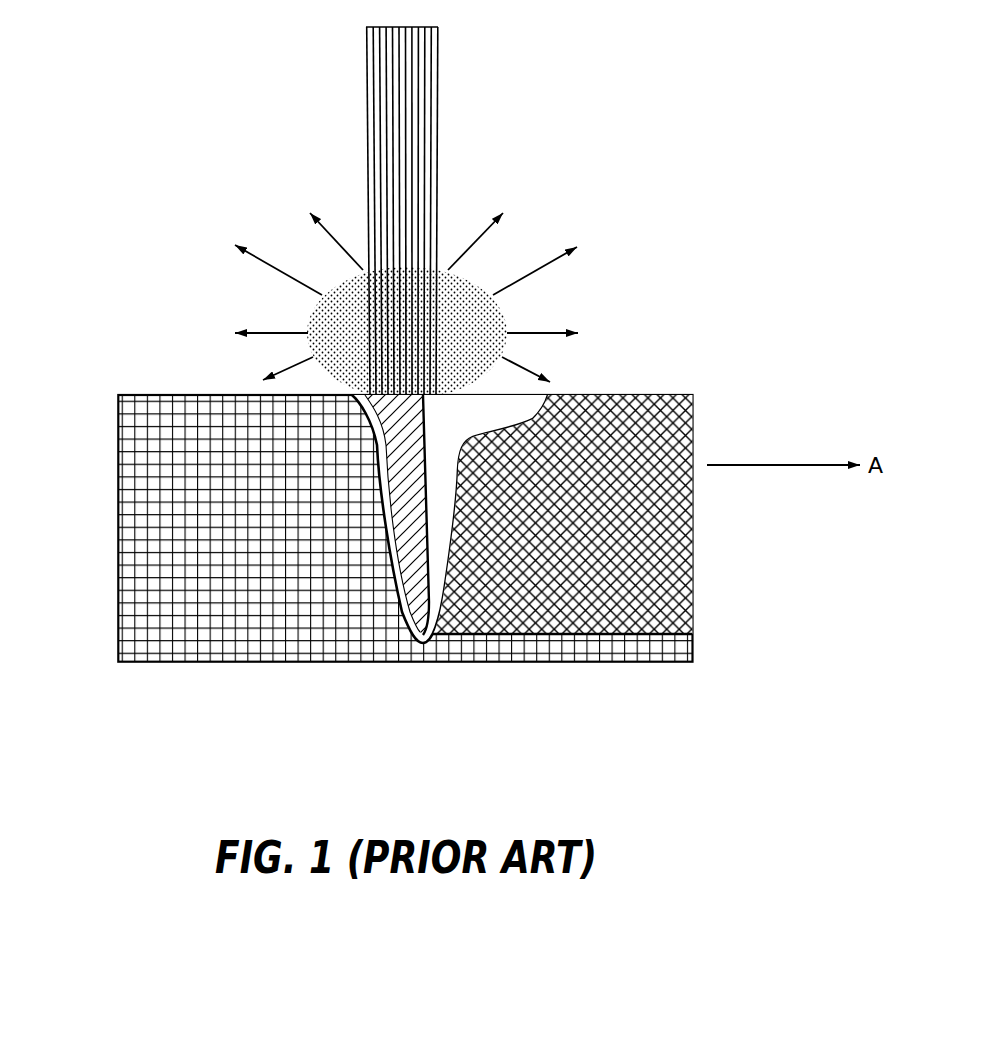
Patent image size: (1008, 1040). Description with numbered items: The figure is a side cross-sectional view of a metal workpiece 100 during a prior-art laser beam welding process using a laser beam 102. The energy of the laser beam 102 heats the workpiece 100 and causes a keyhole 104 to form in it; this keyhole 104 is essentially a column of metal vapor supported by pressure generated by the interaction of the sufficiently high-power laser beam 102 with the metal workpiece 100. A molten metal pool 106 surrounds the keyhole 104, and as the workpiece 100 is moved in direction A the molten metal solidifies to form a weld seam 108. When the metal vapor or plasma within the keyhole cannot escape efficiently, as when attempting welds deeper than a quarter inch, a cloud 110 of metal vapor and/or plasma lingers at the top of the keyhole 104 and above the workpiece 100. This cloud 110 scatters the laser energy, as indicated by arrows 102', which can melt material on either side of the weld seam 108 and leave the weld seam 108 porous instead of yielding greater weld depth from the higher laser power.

The metal workpiece 100 is at (128, 529).
The laser beam 102 is at (438, 211).
The arrows indicating scattered laser energy 102' is at (423, 283).
The keyhole 104 is at (418, 627).
The molten metal pool 106 is at (481, 432).
The weld seam 108 is at (680, 518).
The cloud 110 is at (487, 312).